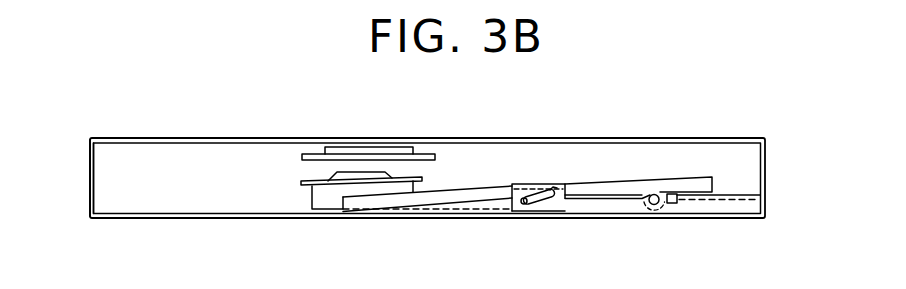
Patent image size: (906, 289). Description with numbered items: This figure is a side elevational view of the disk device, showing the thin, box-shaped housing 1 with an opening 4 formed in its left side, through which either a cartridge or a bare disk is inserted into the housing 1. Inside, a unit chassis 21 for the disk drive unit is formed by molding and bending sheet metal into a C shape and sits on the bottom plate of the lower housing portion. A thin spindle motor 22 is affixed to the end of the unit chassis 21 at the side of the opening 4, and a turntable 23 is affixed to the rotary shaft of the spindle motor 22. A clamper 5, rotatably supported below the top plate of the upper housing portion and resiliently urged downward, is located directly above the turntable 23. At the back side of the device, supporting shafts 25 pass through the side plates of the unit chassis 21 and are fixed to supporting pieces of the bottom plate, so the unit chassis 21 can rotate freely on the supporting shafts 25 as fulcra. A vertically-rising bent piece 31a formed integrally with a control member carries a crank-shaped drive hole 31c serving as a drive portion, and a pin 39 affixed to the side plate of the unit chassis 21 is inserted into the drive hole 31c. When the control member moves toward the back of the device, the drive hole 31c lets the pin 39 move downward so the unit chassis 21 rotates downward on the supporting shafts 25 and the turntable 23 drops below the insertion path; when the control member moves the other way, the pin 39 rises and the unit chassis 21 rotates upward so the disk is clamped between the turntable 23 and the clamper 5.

The housing 1 is at (738, 131).
The opening 4 is at (81, 194).
The clamper 5 is at (304, 153).
The unit chassis 21 is at (453, 197).
The spindle motor 22 is at (334, 201).
The turntable 23 is at (302, 186).
The supporting shaft 25 is at (657, 195).
The bent piece 31a is at (599, 204).
The drive hole 31c is at (551, 191).
The pin 39 is at (525, 209).